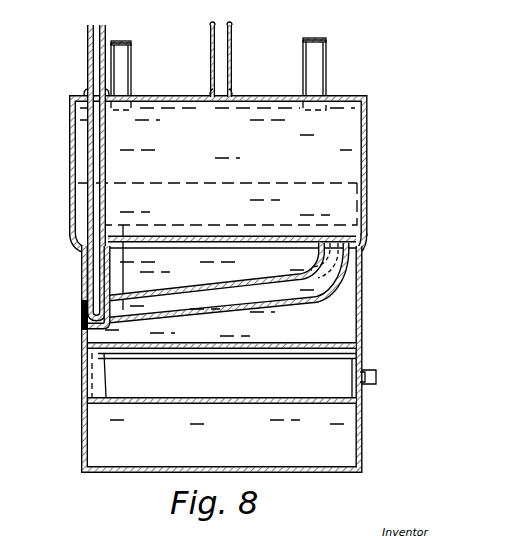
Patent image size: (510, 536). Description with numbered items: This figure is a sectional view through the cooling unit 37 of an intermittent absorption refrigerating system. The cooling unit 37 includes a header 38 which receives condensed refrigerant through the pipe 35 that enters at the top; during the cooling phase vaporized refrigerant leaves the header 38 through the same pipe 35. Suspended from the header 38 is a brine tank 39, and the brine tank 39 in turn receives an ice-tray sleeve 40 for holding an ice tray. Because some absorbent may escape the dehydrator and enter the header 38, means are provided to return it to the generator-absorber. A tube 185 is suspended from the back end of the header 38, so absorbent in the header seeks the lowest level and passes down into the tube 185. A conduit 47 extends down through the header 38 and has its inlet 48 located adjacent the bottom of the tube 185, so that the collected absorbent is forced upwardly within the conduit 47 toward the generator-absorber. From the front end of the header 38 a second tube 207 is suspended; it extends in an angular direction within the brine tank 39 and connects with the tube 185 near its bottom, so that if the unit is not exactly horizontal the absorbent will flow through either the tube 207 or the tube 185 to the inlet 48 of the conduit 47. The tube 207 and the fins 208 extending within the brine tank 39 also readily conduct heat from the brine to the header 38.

The pipe 35 is at (232, 52).
The cooling unit 37 is at (190, 84).
The header 38 is at (350, 160).
The brine tank 39 is at (343, 326).
The ice-tray sleeve 40 is at (298, 344).
The conduit 47 is at (88, 63).
The inlet 48 is at (83, 313).
The tube 185 is at (82, 270).
The tube 207 is at (362, 275).
The fins 208 is at (355, 306).